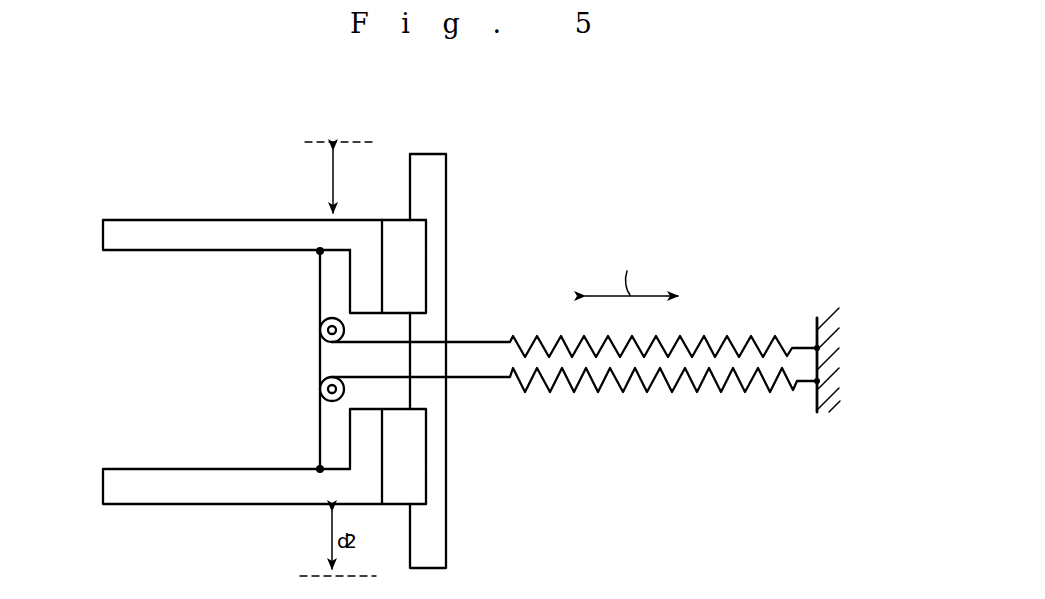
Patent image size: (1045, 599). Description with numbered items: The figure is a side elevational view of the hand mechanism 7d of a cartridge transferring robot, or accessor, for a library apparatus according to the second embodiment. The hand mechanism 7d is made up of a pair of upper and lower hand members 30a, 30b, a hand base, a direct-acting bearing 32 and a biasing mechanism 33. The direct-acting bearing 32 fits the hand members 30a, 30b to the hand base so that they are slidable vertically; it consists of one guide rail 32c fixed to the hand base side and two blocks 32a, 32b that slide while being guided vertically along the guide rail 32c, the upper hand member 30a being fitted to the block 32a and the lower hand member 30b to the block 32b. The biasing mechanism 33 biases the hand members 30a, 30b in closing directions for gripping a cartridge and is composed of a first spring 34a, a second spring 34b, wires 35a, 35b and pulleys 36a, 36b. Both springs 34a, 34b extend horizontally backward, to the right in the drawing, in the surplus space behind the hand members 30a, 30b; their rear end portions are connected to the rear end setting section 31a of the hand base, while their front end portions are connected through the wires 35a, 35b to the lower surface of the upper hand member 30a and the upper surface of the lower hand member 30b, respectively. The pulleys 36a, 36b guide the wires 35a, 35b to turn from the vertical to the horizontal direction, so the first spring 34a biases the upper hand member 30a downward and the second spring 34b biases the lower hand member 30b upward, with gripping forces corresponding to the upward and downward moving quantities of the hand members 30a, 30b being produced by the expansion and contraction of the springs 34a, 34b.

The hand mechanism 7d is at (303, 198).
The upper hand member 30a is at (163, 228).
The lower hand member 30b is at (150, 478).
The rear end setting section 31a is at (827, 326).
The direct-acting bearing 32 is at (458, 156).
The block 32a is at (413, 237).
The block 32b is at (415, 489).
The guide rail 32c is at (440, 178).
The biasing mechanism 33 is at (552, 240).
The first spring 34a is at (733, 340).
The second spring 34b is at (718, 387).
The wire 35a is at (320, 290).
The wire 35b is at (320, 431).
The pulley 36a is at (320, 330).
The pulley 36b is at (320, 389).